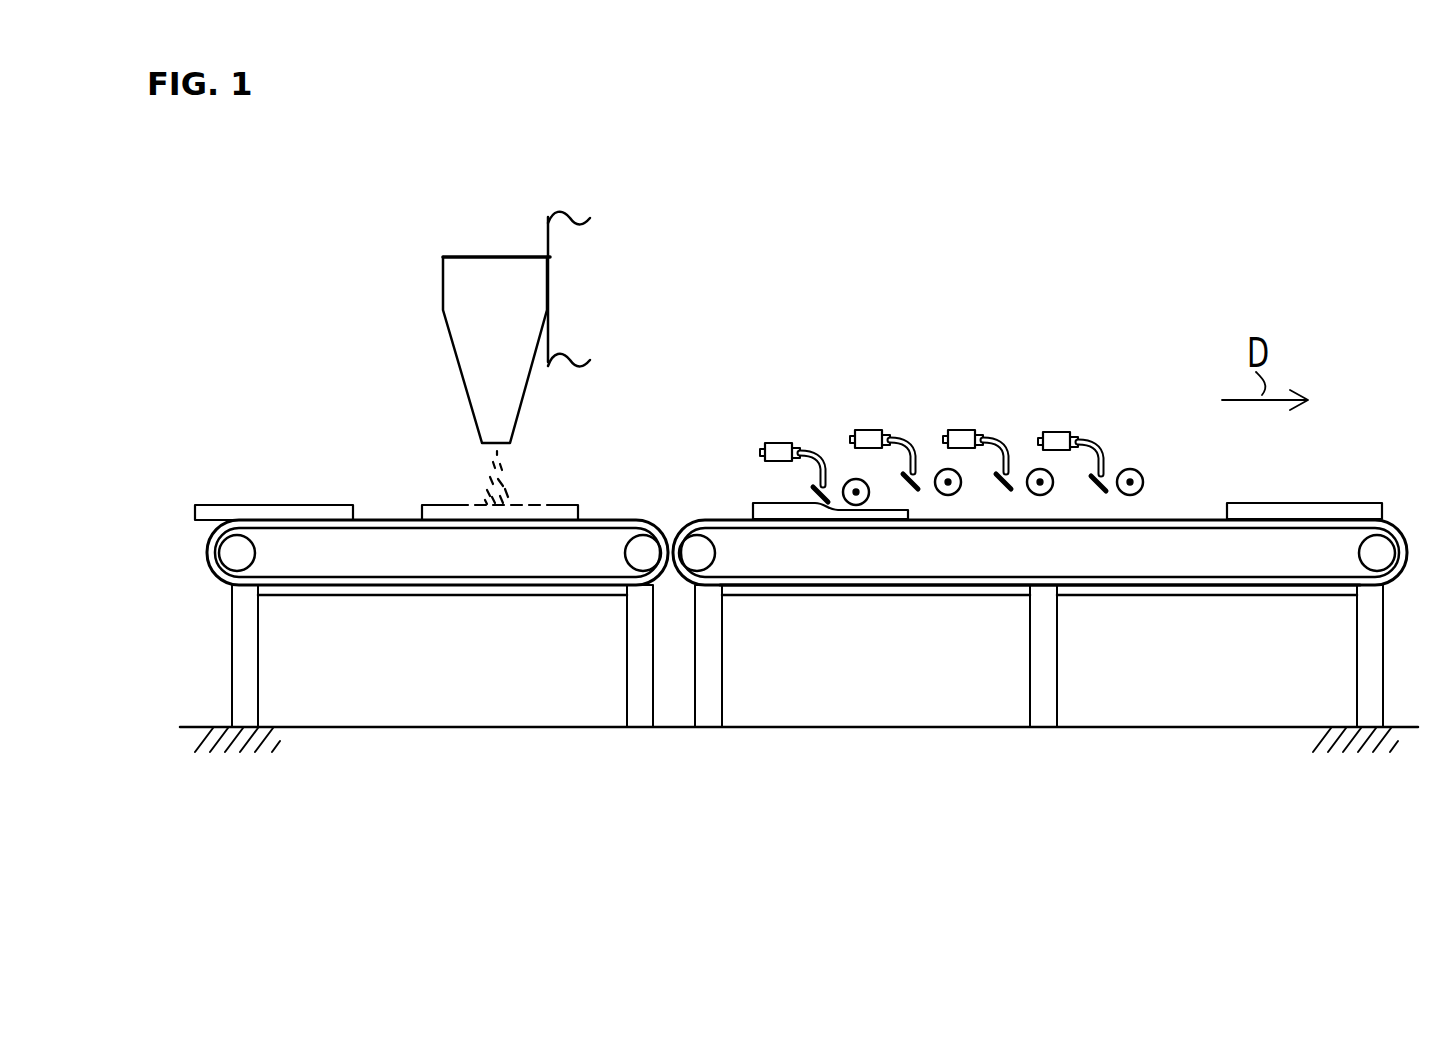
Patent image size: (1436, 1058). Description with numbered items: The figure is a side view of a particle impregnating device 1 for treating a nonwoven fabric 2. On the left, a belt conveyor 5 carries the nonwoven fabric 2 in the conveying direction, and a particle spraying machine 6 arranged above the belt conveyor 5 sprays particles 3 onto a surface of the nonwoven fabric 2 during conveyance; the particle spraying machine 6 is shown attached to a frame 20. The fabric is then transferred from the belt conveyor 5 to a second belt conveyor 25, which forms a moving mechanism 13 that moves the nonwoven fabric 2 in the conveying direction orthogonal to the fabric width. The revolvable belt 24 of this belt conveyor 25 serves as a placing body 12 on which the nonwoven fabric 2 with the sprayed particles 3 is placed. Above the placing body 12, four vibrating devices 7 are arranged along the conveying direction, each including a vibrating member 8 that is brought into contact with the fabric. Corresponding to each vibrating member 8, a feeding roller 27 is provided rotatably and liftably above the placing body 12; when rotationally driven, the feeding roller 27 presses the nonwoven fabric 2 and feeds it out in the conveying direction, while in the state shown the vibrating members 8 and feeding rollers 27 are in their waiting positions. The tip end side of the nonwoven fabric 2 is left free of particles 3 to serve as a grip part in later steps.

The particle impregnating device 1 is at (862, 272).
The nonwoven fabric 2 is at (258, 505).
The particles 3 is at (529, 485).
The belt conveyor 5 is at (379, 601).
The particle spraying machine 6 is at (455, 347).
The vibrating device 7 is at (786, 414).
The vibrating member 8 is at (826, 485).
The placing body 12 is at (722, 518).
The moving mechanism 13 is at (785, 601).
The frame 20 is at (548, 237).
The belt 24 is at (713, 518).
The belt conveyor 25 is at (858, 601).
The feeding roller 27 is at (845, 478).